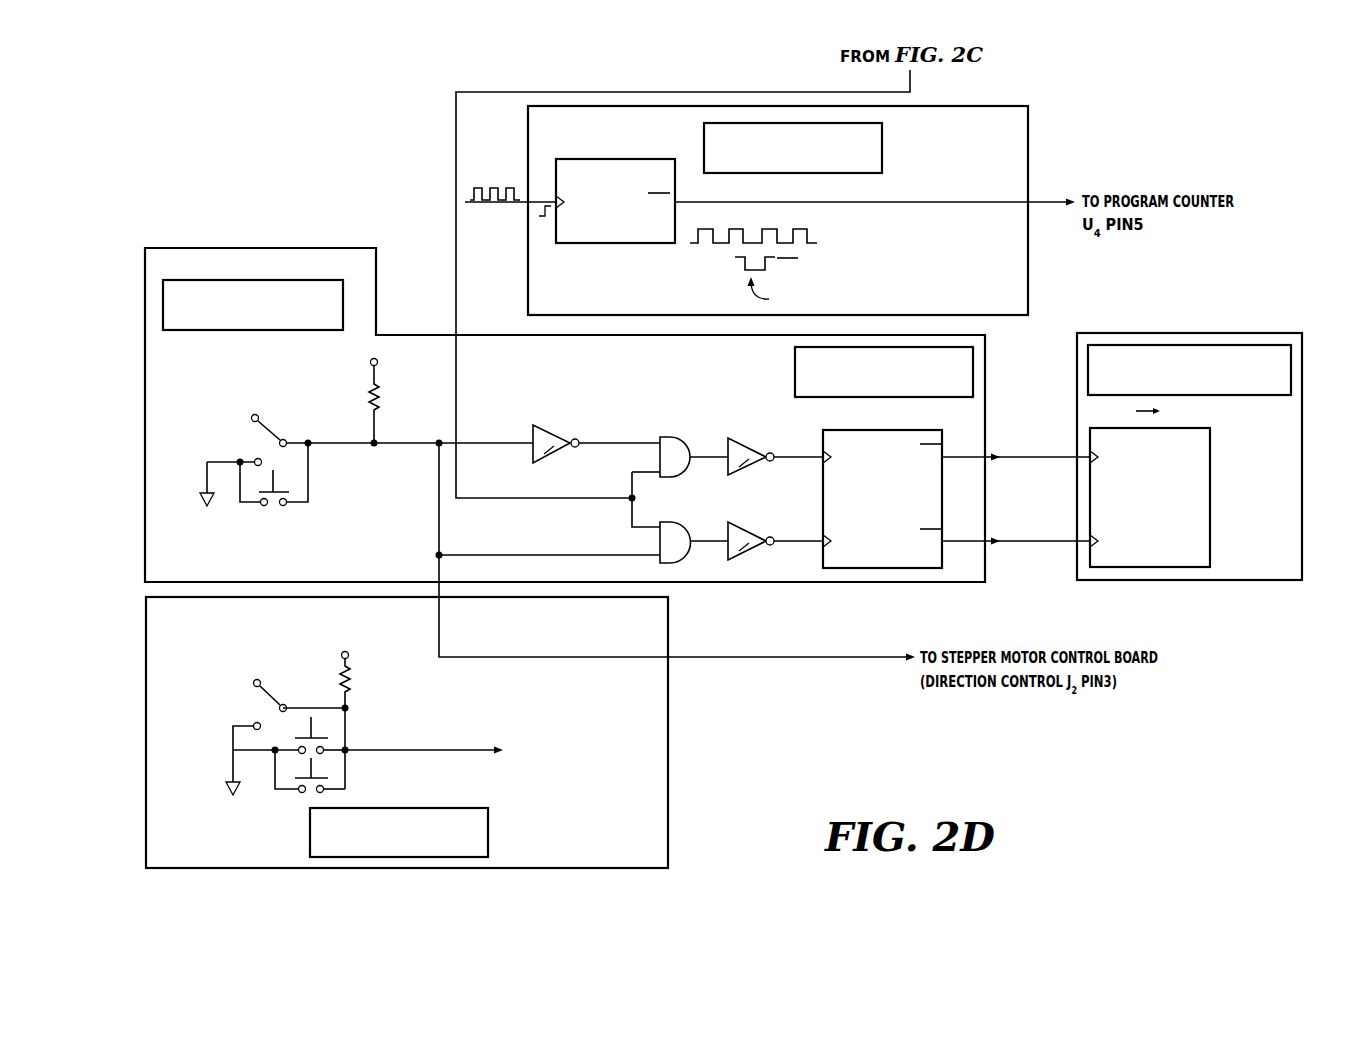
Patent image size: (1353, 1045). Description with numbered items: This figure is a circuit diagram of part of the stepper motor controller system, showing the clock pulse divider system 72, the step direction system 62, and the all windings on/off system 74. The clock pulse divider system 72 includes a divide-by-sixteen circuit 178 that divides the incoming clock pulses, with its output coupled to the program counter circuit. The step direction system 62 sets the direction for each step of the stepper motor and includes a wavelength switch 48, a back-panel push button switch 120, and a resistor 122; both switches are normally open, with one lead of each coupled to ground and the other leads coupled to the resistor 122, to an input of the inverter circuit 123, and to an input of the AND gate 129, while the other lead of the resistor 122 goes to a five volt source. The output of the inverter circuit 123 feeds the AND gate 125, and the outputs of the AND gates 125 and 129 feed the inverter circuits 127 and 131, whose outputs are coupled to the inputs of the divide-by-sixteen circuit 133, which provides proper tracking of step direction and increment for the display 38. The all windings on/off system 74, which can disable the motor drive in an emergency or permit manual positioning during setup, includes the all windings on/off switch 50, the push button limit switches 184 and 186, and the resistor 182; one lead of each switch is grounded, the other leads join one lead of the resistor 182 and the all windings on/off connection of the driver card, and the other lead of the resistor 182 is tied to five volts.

The clock pulse divider system 72 is at (775, 209).
The divide-by-sixteen circuit 178 is at (571, 240).
The step direction system 62 is at (362, 249).
The resistor 122 is at (368, 393).
The wavelength switch 48 is at (282, 435).
The push button switch 120 is at (273, 477).
The inverter circuit 123 is at (563, 437).
The AND gate 125 is at (683, 441).
The inverter circuit 127 is at (770, 452).
The AND gate 129 is at (678, 553).
The inverter circuit 131 is at (750, 553).
The divide-by-sixteen circuit 133 is at (912, 563).
The all windings on/off system 74 is at (749, 600).
The display 38 is at (1184, 563).
The resistor 182 is at (340, 680).
The push button limit switch 184 is at (308, 728).
The push button limit switch 186 is at (307, 767).
The all windings on/off switch 50 is at (278, 708).